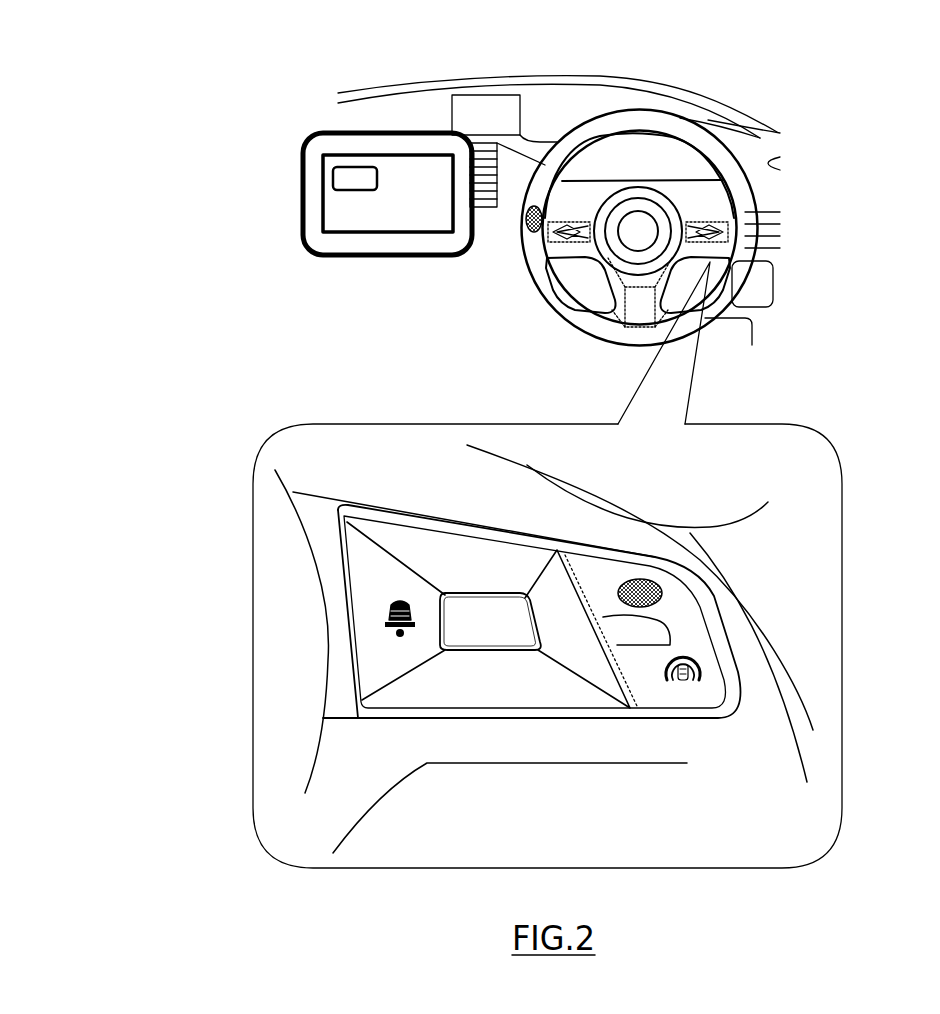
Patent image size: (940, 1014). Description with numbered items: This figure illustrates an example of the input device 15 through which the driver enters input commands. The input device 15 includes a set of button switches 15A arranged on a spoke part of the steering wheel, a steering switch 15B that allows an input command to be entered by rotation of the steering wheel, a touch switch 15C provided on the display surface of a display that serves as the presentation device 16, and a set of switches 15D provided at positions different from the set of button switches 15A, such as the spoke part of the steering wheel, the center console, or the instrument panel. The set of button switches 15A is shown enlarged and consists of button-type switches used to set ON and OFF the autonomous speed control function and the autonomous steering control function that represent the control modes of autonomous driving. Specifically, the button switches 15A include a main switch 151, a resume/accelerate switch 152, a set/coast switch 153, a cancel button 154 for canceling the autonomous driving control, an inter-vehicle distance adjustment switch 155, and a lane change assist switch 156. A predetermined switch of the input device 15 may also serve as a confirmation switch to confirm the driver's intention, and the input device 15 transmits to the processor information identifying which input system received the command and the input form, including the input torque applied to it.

The input device 15 is at (505, 564).
The set of button switches 15A is at (793, 423).
The steering switch 15B is at (653, 113).
The touch switch 15C is at (335, 183).
The set of switches 15D is at (528, 228).
The presentation device 16 is at (320, 152).
The main switch 151 is at (705, 673).
The resume/accelerate switch 152 is at (463, 540).
The set/coast switch 153 is at (480, 687).
The cancel button 154 is at (442, 592).
The inter-vehicle distance adjustment switch 155 is at (377, 619).
The lane change assist switch 156 is at (665, 590).